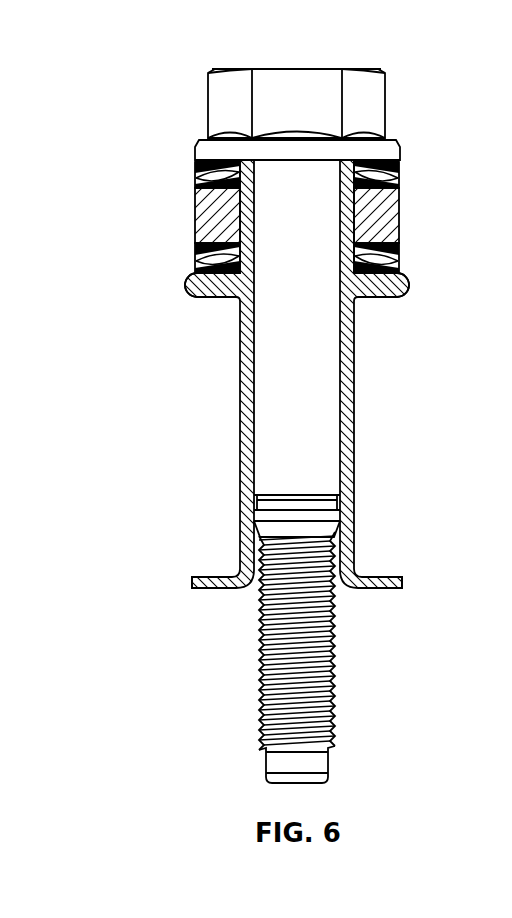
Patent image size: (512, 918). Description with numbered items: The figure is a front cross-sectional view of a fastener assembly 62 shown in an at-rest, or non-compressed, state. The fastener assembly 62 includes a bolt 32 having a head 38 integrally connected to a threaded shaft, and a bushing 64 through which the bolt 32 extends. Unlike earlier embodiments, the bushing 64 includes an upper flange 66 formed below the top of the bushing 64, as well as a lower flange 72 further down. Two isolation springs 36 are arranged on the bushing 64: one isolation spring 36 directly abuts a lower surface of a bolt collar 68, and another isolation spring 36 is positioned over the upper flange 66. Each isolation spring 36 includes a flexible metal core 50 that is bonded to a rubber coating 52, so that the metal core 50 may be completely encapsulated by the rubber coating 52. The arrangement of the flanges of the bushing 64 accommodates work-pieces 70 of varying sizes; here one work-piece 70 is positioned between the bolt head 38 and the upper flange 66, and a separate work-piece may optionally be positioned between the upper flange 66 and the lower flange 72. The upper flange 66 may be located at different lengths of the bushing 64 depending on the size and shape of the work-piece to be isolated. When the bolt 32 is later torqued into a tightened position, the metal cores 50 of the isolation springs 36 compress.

The fastener assembly 62 is at (160, 30).
The head 38 is at (332, 69).
The bolt 32 is at (380, 108).
The bolt collar 68 is at (195, 158).
The rubber coating 52 is at (400, 160).
The isolation spring 36 is at (195, 184).
The work-piece 70 is at (195, 213).
The metal core 50 is at (401, 208).
The bushing 64 is at (188, 286).
The upper flange 66 is at (198, 298).
The lower flange 72 is at (192, 582).